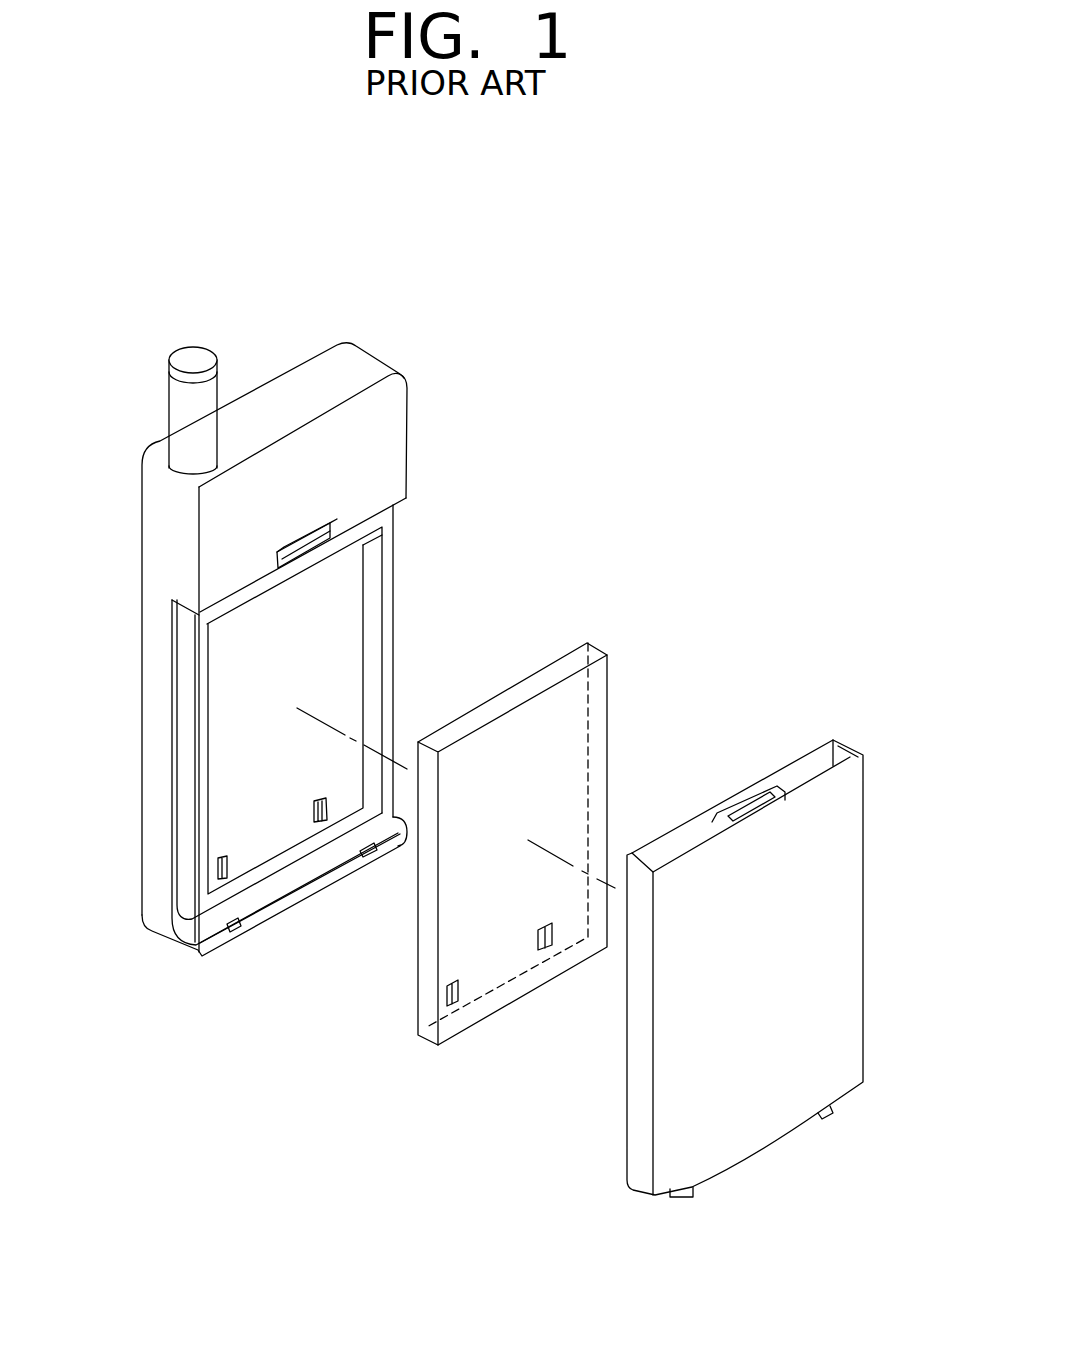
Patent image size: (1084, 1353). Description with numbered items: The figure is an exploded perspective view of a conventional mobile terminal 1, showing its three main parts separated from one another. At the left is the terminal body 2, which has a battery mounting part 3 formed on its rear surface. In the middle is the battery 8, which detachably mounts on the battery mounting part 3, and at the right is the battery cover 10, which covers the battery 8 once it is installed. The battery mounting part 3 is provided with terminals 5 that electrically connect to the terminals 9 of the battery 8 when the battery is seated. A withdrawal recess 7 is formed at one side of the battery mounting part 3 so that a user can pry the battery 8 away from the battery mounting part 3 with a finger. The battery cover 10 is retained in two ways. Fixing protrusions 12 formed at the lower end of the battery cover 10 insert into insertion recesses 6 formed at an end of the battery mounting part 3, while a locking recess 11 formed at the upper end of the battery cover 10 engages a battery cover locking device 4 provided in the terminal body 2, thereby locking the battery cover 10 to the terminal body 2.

The mobile terminal 1 is at (628, 511).
The terminal body 2 is at (158, 692).
The battery mounting part 3 is at (340, 648).
The battery cover locking device 4 is at (333, 530).
The terminals 5 is at (321, 823).
The insertion recesses 6 is at (238, 931).
The withdrawal recess 7 is at (298, 563).
The battery 8 is at (573, 703).
The terminals 9 is at (537, 948).
The battery cover 10 is at (826, 937).
The locking recess 11 is at (760, 790).
The fixing protrusions 12 is at (822, 1116).